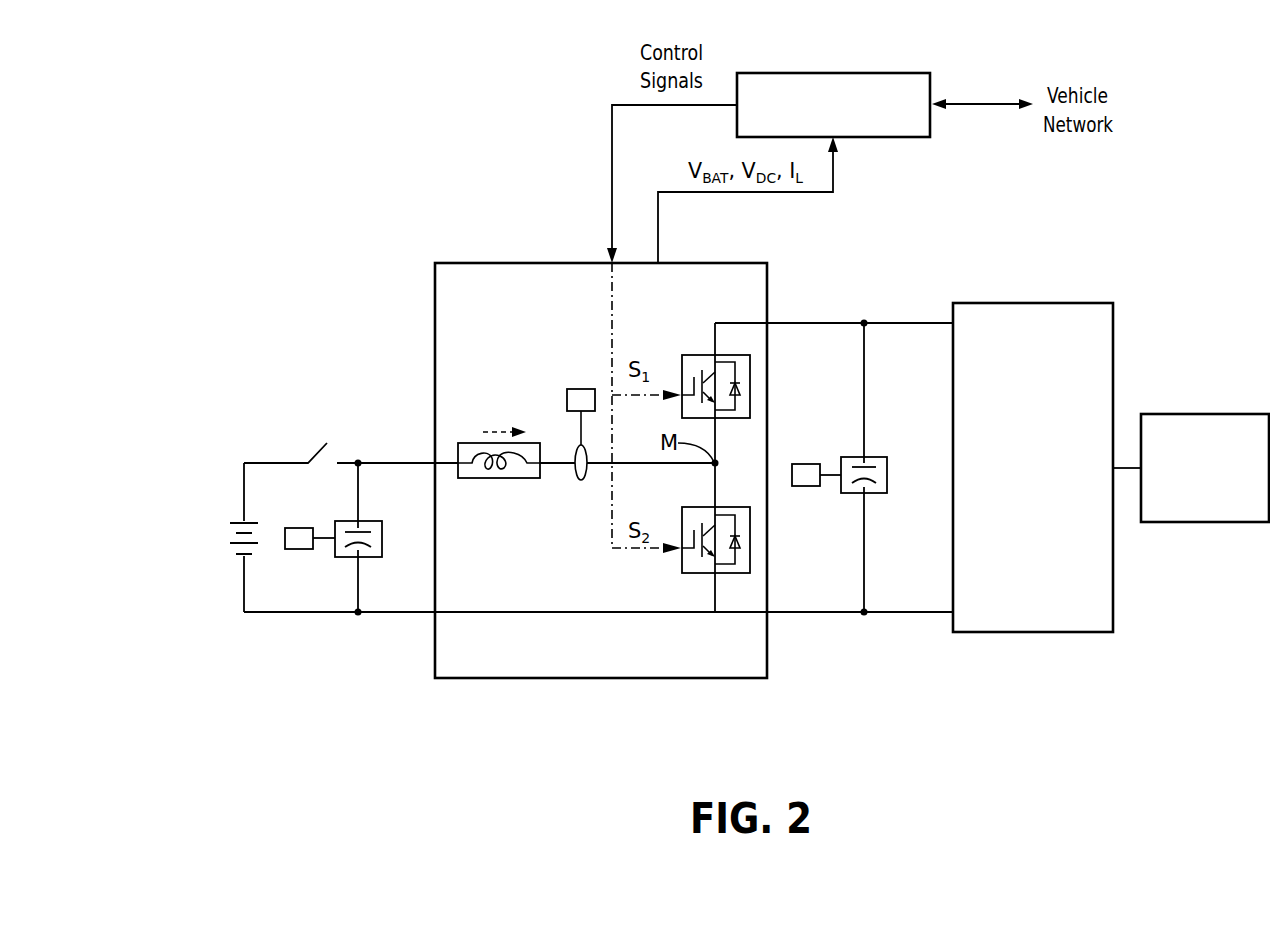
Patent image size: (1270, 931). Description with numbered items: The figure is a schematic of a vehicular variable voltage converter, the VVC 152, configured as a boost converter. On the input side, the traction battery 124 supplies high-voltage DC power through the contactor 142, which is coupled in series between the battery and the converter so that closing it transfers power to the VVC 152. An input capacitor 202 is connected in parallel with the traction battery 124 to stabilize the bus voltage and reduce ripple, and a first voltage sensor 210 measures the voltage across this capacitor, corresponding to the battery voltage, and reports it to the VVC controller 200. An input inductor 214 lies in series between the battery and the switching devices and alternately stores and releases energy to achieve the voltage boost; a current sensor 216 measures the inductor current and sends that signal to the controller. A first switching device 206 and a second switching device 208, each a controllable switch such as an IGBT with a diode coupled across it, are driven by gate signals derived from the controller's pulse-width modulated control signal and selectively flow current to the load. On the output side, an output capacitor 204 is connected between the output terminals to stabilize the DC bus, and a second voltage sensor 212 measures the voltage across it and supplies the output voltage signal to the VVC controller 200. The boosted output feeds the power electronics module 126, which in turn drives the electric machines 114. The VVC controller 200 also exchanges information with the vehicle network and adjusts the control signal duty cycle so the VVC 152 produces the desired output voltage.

The VVC controller 200 is at (833, 73).
The power electronics module 126 is at (1010, 303).
The electric machines 114 is at (1188, 414).
The variable voltage converter 152 is at (603, 678).
The contactor 142 is at (318, 452).
The traction battery 124 is at (233, 535).
The first voltage sensor 210 is at (308, 528).
The input capacitor 202 is at (363, 521).
The input inductor 214 is at (499, 478).
The current sensor 216 is at (582, 389).
The first switching device 206 is at (700, 355).
The second switching device 208 is at (700, 507).
The second voltage sensor 212 is at (807, 464).
The output capacitor 204 is at (873, 457).